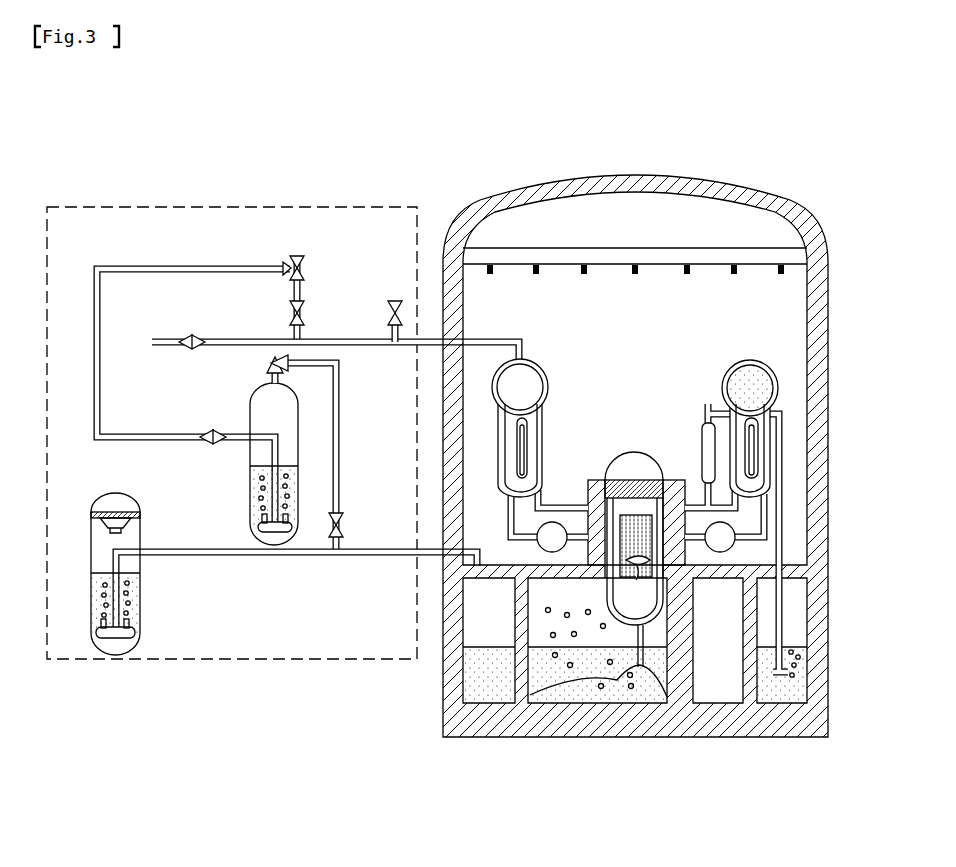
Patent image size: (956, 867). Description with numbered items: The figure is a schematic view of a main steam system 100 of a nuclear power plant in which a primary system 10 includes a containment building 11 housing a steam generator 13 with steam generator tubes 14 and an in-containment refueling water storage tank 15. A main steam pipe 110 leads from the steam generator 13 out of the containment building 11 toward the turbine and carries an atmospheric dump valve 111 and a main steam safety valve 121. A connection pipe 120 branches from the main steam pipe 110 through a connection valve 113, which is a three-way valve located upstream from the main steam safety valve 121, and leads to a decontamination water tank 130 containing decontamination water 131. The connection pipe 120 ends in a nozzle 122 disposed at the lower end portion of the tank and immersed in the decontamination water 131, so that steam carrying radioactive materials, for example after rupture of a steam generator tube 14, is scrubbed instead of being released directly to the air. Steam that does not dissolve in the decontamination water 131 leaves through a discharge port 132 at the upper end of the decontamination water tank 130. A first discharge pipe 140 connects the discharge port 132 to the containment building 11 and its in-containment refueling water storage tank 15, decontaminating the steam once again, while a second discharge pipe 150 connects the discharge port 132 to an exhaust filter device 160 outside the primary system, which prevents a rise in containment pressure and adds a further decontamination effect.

The primary system 10 is at (626, 426).
The containment building 11 is at (706, 186).
The steam generator 13 is at (647, 504).
The steam generator tube 14 is at (531, 425).
The in-containment refueling water storage tank 15 is at (470, 625).
The main steam system 100 is at (102, 183).
The main steam pipe 110 is at (398, 347).
The atmospheric dump valve 111 is at (395, 300).
The connection valve 113 is at (298, 258).
The connection pipe 120 is at (212, 263).
The main steam safety valve 121 is at (304, 313).
The nozzle 122 is at (258, 526).
The decontamination water tank 130 is at (245, 464).
The decontamination water 131 is at (252, 477).
The discharge port 132 is at (263, 388).
The first discharge pipe 140 is at (395, 557).
The second discharge pipe 150 is at (260, 557).
The exhaust filter device 160 is at (140, 620).